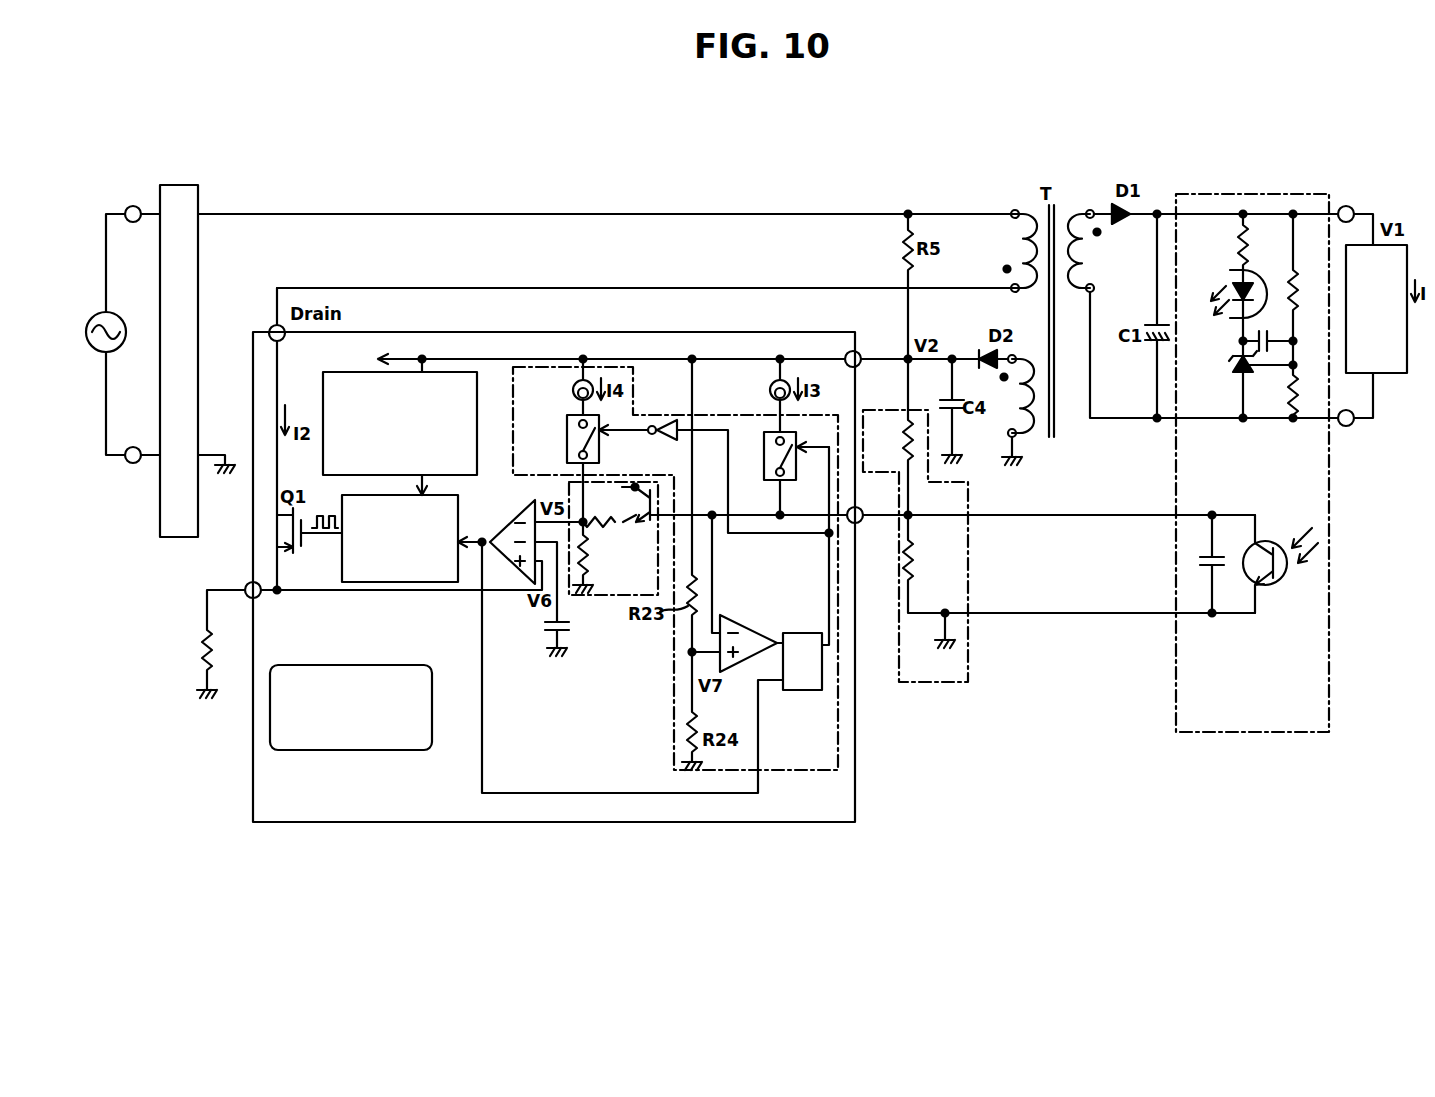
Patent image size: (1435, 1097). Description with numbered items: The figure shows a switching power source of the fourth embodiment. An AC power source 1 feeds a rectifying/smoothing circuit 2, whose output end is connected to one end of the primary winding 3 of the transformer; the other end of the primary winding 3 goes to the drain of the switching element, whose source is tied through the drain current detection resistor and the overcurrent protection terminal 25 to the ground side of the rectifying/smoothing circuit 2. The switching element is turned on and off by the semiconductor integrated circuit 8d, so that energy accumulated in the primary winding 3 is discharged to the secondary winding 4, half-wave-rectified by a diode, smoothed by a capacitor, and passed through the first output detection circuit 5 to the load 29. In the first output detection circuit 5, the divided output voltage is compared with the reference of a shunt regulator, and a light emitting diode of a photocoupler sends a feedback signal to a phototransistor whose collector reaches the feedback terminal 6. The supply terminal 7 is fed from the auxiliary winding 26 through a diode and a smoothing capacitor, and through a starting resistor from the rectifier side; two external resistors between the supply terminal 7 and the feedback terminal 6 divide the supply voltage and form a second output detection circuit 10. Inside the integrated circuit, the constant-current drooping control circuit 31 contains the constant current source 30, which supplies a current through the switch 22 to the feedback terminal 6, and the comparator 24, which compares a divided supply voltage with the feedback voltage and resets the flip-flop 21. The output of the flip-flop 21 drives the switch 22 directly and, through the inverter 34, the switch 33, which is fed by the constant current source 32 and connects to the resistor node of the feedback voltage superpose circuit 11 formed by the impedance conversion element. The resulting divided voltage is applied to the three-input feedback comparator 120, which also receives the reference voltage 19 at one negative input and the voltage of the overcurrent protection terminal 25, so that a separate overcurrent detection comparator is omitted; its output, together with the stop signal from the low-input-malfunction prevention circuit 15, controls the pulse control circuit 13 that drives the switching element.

The AC power source 1 is at (116, 322).
The rectifying/smoothing circuit 2 is at (184, 186).
The primary winding 3 is at (1003, 264).
The secondary winding 4 is at (1082, 268).
The first output detection circuit 5 is at (1215, 732).
The feedback FB terminal 6 is at (862, 523).
The Vcc terminal 7 is at (866, 352).
The semiconductor integrated circuit 8d is at (482, 822).
The second output detection circuit 10 is at (934, 682).
The feedback voltage superpose circuit 11 is at (592, 596).
The pulse control circuit 13 is at (438, 582).
The low-input-malfunction prevention circuit 15 is at (327, 374).
The reference voltage 19 is at (543, 624).
The flip-flop 21 is at (808, 692).
The switch 22 is at (766, 478).
The comparator 24 is at (752, 630).
The OCP terminal 25 is at (250, 580).
The auxiliary winding 26 is at (1003, 434).
The load 29 is at (1388, 373).
The constant current source 30 is at (770, 388).
The constant-current drooping control circuit 31 is at (674, 724).
The constant current source 32 is at (572, 390).
The switch 33 is at (566, 434).
The inverter 34 is at (656, 442).
The 3-input feedback comparator 120 is at (508, 519).